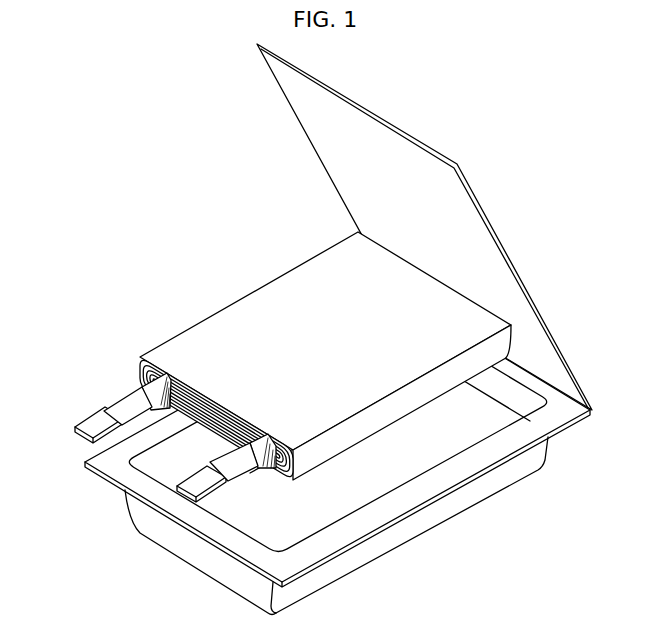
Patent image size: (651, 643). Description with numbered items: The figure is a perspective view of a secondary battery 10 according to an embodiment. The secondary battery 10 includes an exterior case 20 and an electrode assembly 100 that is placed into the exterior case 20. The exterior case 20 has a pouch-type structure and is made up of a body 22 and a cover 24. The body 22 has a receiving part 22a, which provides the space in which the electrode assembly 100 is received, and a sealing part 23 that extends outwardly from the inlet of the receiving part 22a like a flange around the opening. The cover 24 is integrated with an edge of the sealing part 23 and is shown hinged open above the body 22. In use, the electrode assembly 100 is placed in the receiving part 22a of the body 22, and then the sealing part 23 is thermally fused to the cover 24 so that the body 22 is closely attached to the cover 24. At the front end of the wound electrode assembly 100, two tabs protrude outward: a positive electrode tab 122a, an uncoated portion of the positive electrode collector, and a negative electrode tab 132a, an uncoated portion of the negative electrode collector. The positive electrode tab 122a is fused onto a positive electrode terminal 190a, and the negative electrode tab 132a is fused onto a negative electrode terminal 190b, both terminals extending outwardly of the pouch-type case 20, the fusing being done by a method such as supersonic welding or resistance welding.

The secondary battery 10 is at (80, 69).
The exterior case 20 is at (337, 459).
The body 22 is at (488, 482).
The receiving part 22a is at (288, 533).
The sealing part 23 is at (233, 543).
The cover 24 is at (558, 374).
The electrode assembly 100 is at (207, 303).
The positive electrode tab 122a is at (143, 387).
The negative electrode tab 132a is at (177, 484).
The positive electrode terminal 190a is at (83, 423).
The negative electrode terminal 190b is at (177, 500).